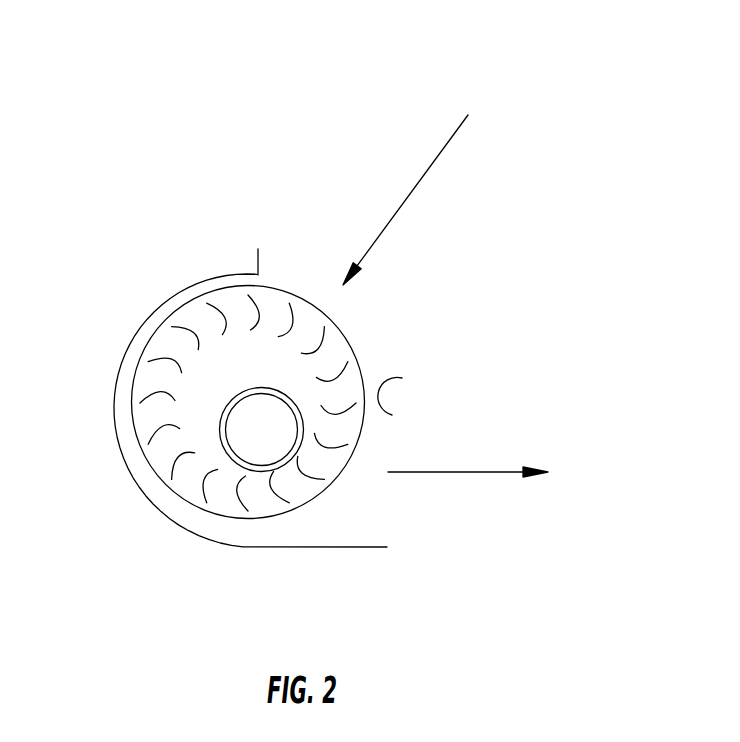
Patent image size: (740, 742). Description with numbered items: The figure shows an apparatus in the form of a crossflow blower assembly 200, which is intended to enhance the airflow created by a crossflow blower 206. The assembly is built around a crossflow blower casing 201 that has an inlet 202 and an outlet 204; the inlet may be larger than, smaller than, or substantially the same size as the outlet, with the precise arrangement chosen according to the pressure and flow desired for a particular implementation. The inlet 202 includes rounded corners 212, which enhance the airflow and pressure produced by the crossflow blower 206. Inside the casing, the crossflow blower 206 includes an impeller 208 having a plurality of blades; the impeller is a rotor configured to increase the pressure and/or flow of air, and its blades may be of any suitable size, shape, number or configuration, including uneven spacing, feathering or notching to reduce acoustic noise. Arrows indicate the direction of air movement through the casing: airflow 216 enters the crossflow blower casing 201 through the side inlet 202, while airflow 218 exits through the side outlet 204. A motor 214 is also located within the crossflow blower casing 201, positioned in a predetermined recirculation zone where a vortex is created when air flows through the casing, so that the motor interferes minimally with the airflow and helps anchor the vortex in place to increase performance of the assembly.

The crossflow blower assembly 200 is at (674, 48).
The crossflow blower casing 201 is at (125, 455).
The inlet 202 is at (290, 267).
The outlet 204 is at (385, 515).
The crossflow blower 206 is at (225, 517).
The impeller 208 is at (168, 373).
The rounded corners 212 is at (257, 276).
The motor 214 is at (291, 462).
The airflow 216 is at (442, 183).
The airflow 218 is at (492, 475).